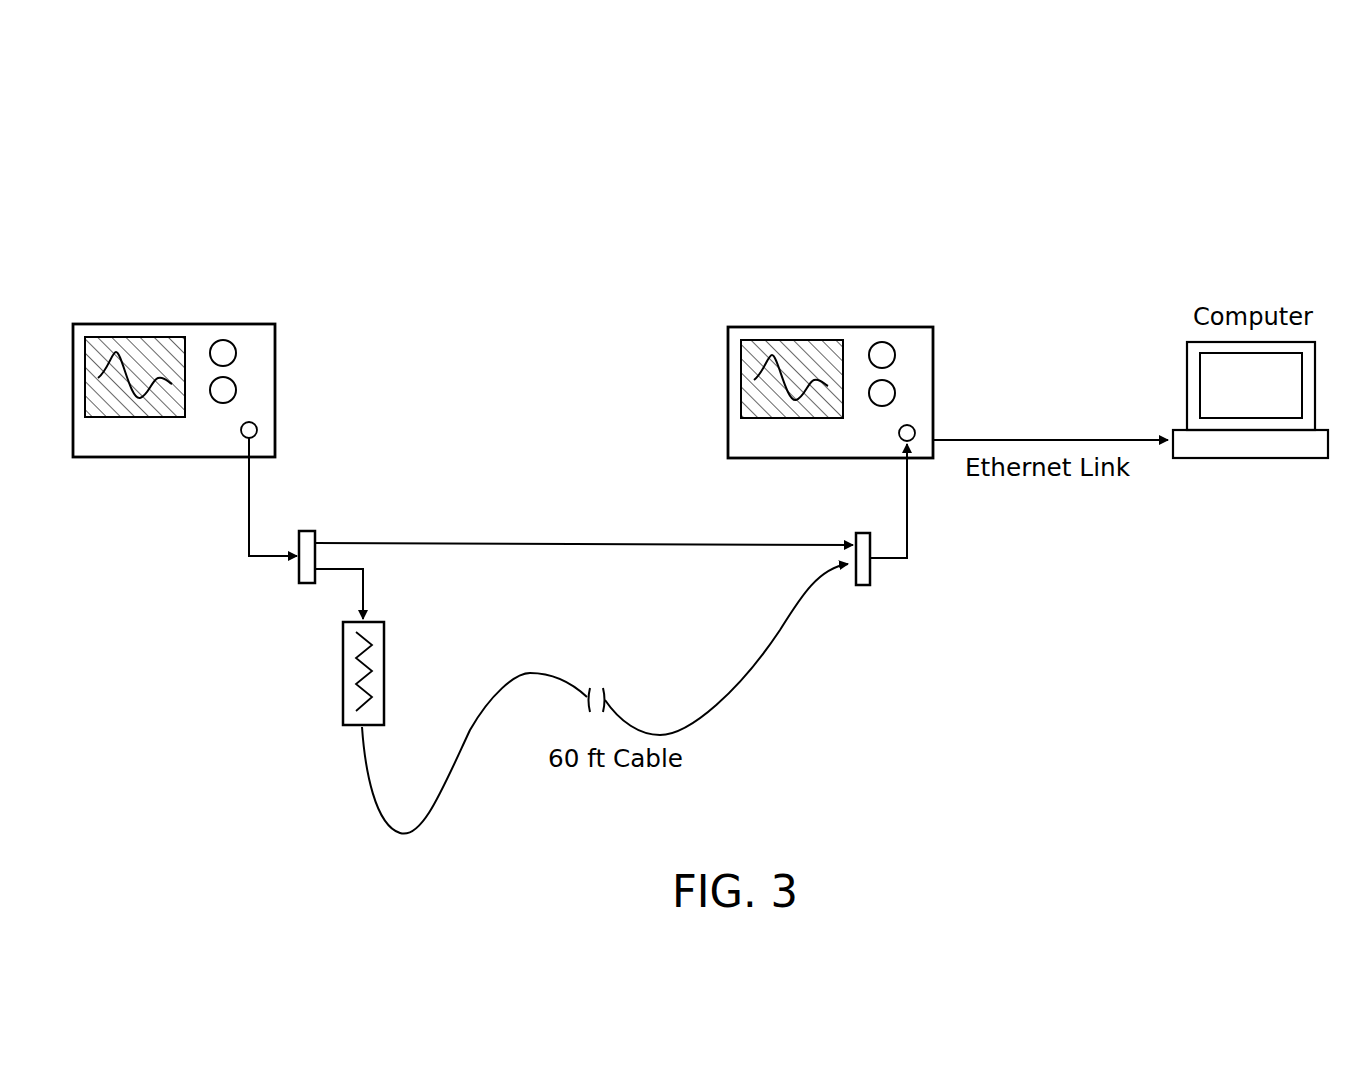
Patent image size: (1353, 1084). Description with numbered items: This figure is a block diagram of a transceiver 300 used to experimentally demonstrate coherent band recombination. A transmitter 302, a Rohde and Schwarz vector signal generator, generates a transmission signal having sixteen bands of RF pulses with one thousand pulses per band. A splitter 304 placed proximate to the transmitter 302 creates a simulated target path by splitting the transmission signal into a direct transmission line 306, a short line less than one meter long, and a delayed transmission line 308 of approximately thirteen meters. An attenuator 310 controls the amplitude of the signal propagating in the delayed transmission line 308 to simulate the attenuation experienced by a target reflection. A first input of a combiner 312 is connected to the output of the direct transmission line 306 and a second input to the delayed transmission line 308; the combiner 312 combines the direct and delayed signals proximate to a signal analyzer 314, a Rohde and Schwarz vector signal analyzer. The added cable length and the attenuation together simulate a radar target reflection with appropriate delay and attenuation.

The transceiver 300 is at (651, 145).
The transmitter 302 is at (277, 386).
The splitter 304 is at (297, 577).
The direct transmission line 306 is at (522, 541).
The delayed transmission line 308 is at (365, 586).
The attenuator 310 is at (385, 666).
The combiner 312 is at (872, 581).
The signal analyzer 314 is at (935, 389).